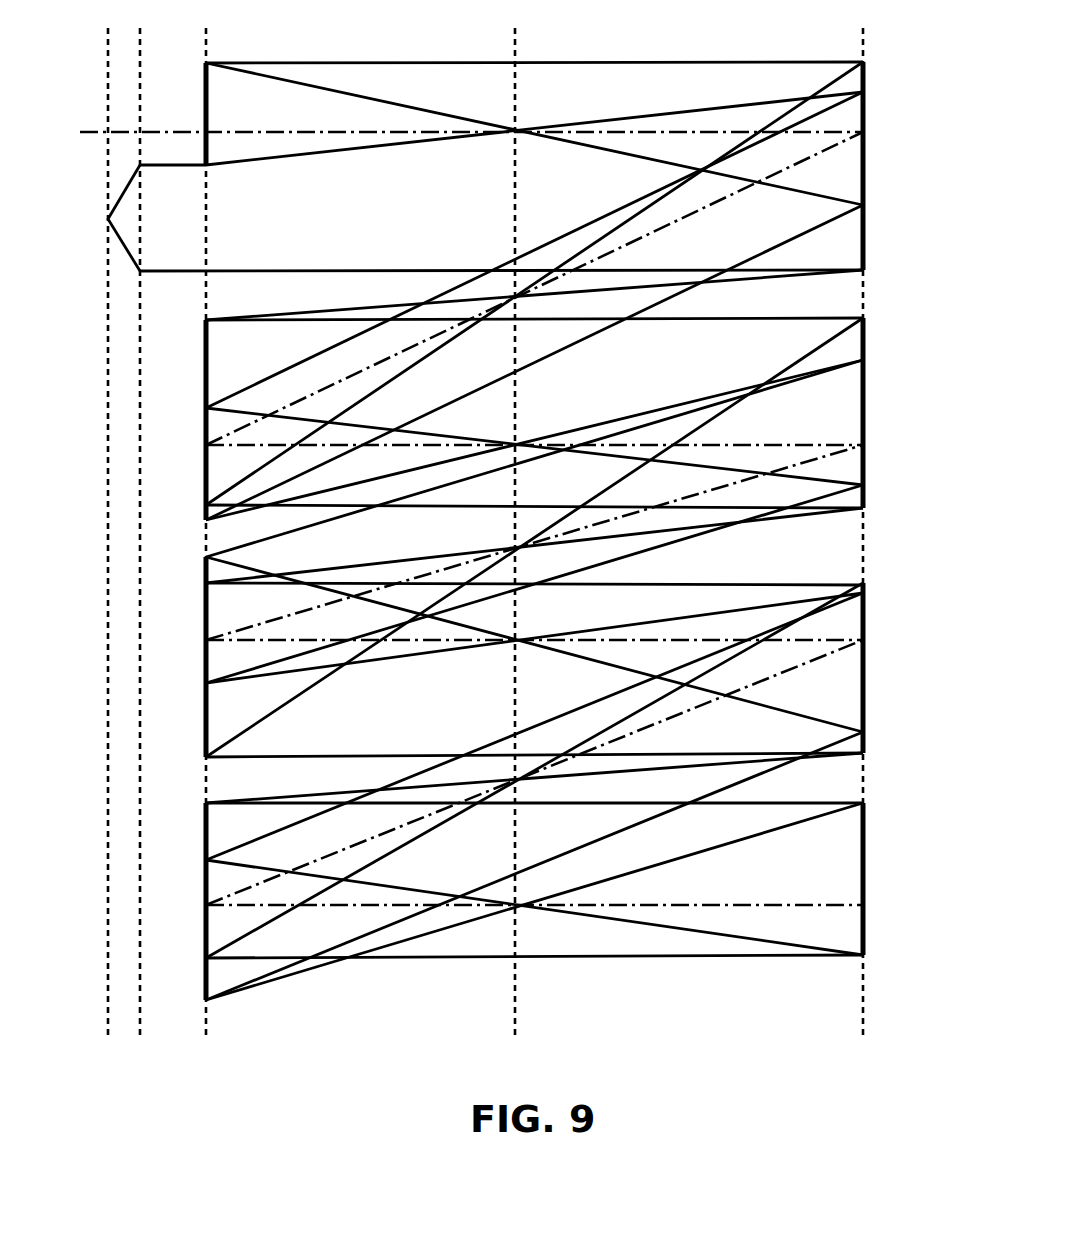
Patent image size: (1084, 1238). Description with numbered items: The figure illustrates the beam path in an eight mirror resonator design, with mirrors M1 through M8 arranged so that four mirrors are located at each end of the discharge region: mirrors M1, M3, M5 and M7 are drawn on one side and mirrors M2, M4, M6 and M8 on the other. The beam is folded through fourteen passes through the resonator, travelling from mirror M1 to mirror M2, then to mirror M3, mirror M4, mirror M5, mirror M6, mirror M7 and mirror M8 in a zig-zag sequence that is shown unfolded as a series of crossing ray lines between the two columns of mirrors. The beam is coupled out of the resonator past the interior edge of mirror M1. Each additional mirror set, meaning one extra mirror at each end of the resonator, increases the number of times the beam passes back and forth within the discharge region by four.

The mirror M1 is at (205, 110).
The mirror M2 is at (864, 165).
The mirror M3 is at (205, 385).
The mirror M4 is at (864, 410).
The mirror M5 is at (205, 608).
The mirror M6 is at (864, 680).
The mirror M7 is at (205, 930).
The mirror M8 is at (864, 895).